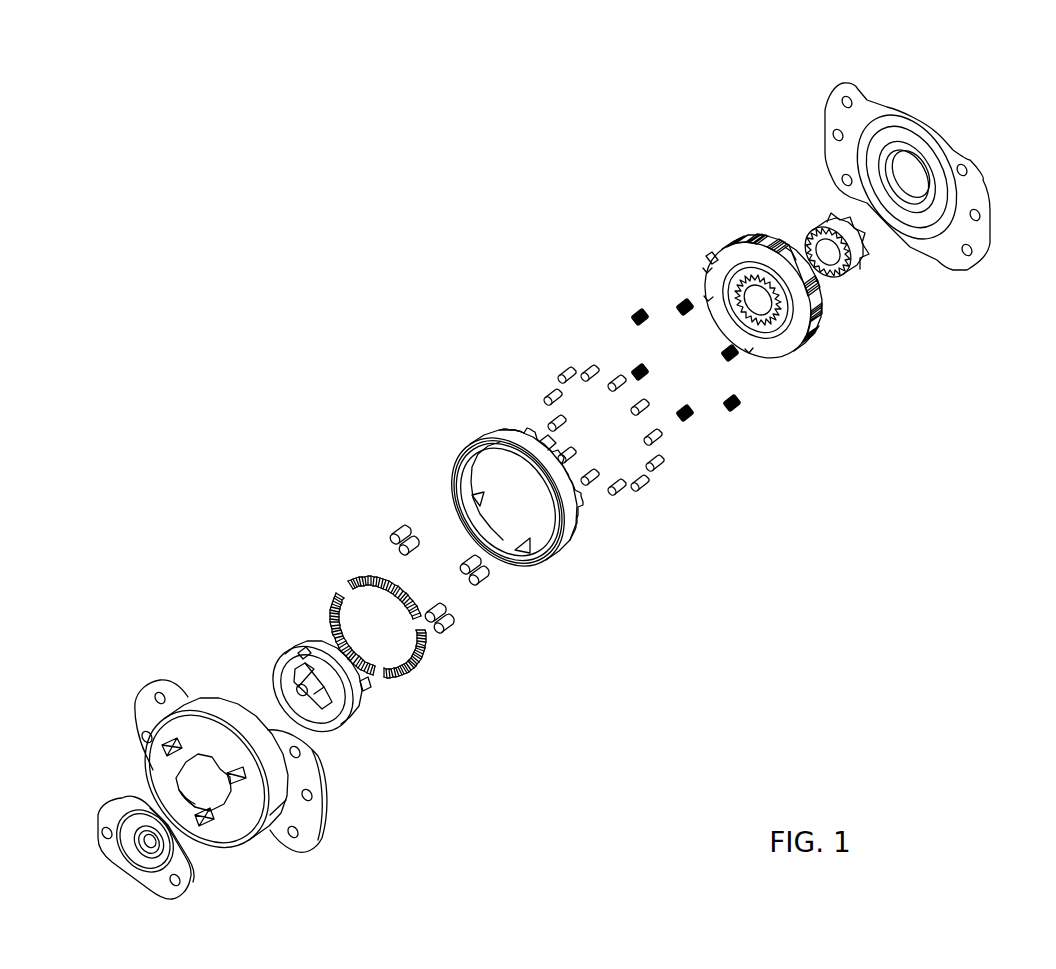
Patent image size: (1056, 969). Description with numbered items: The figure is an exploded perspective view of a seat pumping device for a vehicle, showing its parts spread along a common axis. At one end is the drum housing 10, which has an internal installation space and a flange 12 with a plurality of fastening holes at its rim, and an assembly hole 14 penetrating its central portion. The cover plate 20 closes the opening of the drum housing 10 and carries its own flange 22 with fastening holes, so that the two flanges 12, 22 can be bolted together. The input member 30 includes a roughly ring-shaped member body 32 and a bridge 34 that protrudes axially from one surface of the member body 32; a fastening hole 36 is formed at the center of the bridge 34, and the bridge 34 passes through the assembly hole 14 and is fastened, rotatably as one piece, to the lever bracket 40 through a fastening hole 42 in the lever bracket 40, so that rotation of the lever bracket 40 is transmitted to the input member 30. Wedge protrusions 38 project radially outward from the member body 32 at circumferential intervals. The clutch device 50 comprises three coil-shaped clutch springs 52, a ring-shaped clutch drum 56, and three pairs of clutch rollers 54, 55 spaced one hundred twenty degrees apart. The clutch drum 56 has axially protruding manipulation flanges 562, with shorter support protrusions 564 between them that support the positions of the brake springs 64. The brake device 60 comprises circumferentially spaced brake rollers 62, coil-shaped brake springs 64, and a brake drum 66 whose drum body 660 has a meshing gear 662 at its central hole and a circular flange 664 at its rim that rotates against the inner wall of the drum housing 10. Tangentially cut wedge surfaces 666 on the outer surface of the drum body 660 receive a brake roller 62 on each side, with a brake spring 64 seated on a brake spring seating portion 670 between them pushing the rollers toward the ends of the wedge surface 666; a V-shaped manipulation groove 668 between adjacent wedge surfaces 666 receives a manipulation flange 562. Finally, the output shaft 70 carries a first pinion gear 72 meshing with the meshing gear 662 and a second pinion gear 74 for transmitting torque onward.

The drum housing 10 is at (243, 746).
The flange 12 is at (300, 835).
The assembly hole 14 is at (222, 800).
The cover plate 20 is at (895, 177).
The flange 22 is at (988, 192).
The input member 30 is at (331, 701).
The member body 32 is at (352, 692).
The bridge 34 is at (338, 712).
The fastening hole 36 is at (320, 712).
The wedge protrusion 38 is at (305, 652).
The lever bracket 40 is at (115, 813).
The fastening hole 42 is at (148, 846).
The clutch device 50 is at (495, 531).
The clutch spring 52 is at (430, 646).
The clutch roller 54 is at (472, 582).
The clutch roller 55 is at (548, 538).
The clutch drum 56 is at (577, 522).
The manipulation flange 562 is at (480, 448).
The support protrusion 564 is at (547, 445).
The brake device 60 is at (724, 332).
The brake roller 62 is at (645, 485).
The brake spring 64 is at (735, 410).
The brake drum 66 is at (749, 286).
The drum body 660 is at (690, 290).
The meshing gear 662 is at (708, 276).
The flange 664 is at (712, 258).
The wedge surface 666 is at (748, 240).
The manipulation groove 668 is at (730, 232).
The brake spring seating portion 670 is at (787, 245).
The output shaft 70 is at (874, 213).
The first pinion gear 72 is at (858, 265).
The second pinion gear 74 is at (868, 245).